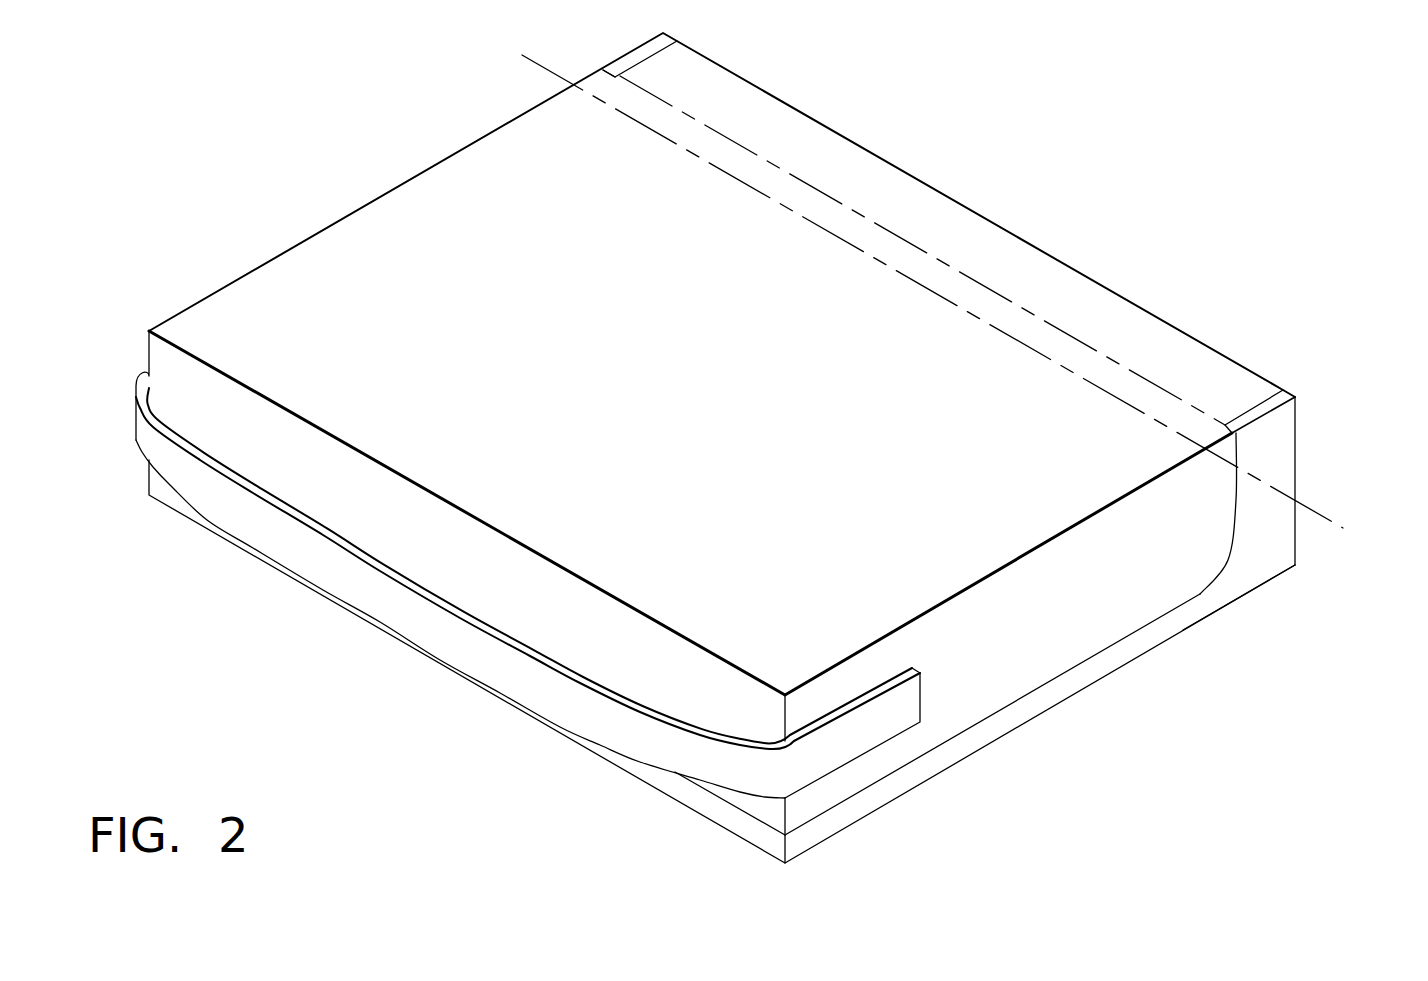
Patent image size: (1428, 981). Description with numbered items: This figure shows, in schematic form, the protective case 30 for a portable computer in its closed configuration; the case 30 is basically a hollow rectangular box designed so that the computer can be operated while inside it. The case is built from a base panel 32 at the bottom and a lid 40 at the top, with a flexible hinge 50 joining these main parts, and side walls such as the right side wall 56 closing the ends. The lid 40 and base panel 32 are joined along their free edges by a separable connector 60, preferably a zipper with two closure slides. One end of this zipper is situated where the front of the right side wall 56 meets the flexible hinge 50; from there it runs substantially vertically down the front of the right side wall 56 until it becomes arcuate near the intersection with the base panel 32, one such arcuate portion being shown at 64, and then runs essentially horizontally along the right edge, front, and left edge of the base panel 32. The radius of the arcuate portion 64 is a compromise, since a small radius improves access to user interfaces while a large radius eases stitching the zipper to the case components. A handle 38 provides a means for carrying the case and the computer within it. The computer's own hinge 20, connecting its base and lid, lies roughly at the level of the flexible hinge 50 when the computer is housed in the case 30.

The hinge 20 is at (1306, 507).
The protective case 30 is at (397, 189).
The base panel 32 is at (683, 793).
The handle 38 is at (420, 626).
The lid 40 is at (554, 339).
The flexible hinge 50 is at (1050, 316).
The right side wall 56 is at (1258, 553).
The separable connector 60 is at (1050, 683).
The arcuate portion 64 is at (1233, 556).